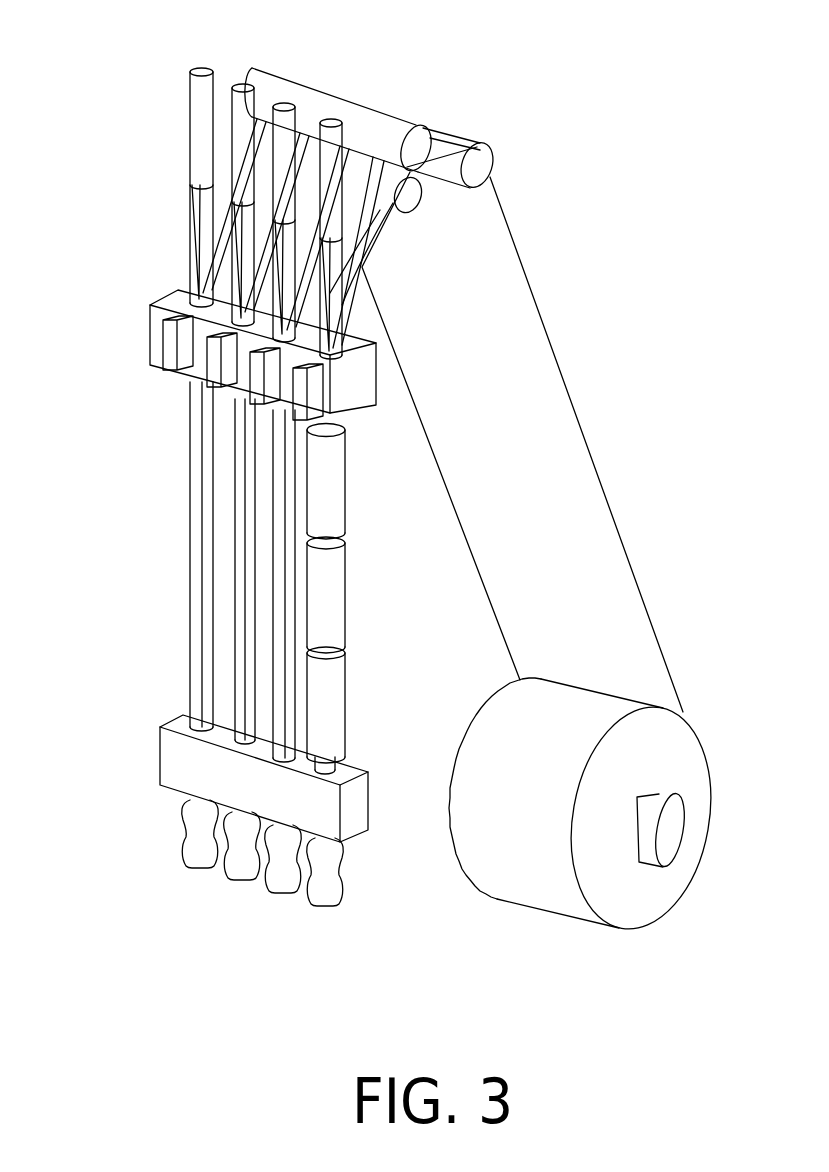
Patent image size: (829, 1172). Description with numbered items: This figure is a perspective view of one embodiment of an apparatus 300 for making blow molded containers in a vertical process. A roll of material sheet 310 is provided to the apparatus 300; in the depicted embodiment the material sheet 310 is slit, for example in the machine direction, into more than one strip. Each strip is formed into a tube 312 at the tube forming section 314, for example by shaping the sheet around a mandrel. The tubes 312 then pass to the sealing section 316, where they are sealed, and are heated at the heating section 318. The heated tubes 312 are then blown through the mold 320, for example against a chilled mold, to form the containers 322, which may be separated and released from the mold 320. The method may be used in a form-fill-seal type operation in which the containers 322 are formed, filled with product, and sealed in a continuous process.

The apparatus 300 is at (530, 62).
The material sheet 310 is at (678, 755).
The tube 312 is at (252, 303).
The tube forming section 314 is at (183, 160).
The sealing section 316 is at (165, 367).
The heating section 318 is at (352, 443).
The mold 320 is at (175, 757).
The container 322 is at (202, 848).